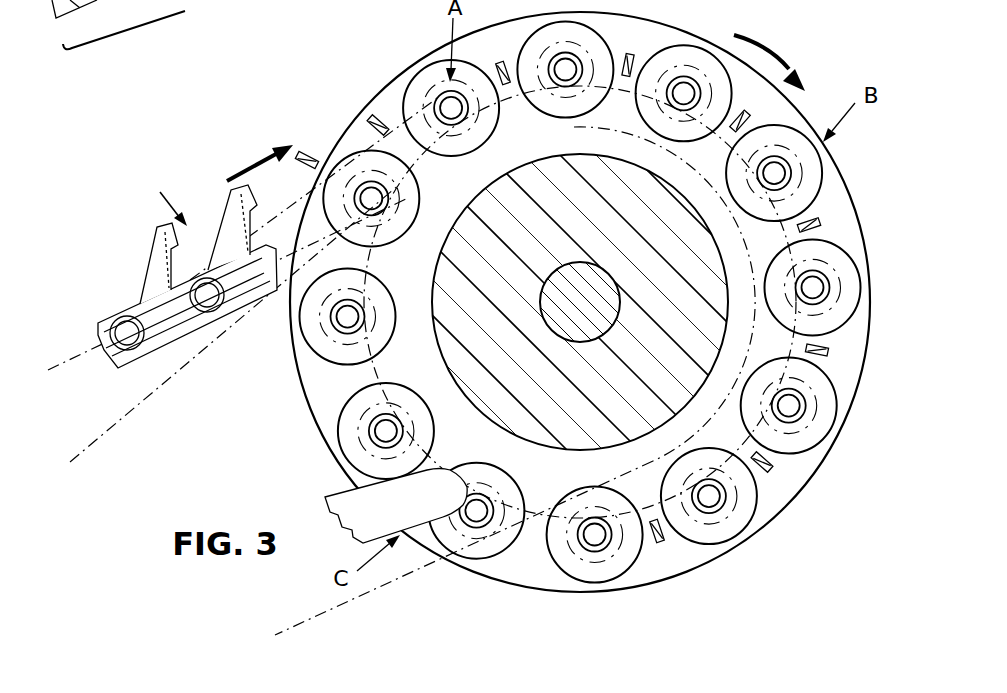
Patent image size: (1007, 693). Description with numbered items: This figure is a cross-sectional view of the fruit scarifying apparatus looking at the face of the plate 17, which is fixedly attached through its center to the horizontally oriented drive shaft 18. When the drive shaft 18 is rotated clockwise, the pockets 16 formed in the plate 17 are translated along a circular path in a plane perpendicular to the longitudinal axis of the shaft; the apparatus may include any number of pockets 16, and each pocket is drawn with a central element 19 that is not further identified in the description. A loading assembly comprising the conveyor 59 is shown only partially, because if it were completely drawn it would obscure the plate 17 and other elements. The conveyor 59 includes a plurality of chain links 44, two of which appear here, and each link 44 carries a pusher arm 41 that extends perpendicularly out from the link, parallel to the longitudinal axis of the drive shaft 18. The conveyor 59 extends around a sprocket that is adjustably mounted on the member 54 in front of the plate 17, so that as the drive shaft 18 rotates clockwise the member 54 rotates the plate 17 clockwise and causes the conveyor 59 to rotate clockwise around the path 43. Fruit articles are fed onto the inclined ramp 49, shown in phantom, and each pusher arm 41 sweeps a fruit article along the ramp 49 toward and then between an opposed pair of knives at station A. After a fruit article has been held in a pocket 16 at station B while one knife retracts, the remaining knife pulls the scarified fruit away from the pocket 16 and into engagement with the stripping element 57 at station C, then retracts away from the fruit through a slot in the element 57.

The pockets 16 is at (408, 82).
The plate 17 is at (366, 108).
The drive shaft 18 is at (545, 298).
The roller axle 19 is at (443, 100).
The pusher arm 41 is at (307, 148).
The path 43 is at (443, 180).
The chain links 44 is at (150, 338).
The inclined ramp 49 is at (73, 352).
The member 54 is at (444, 240).
The stripping element 57 is at (333, 494).
The conveyor 59 is at (156, 197).